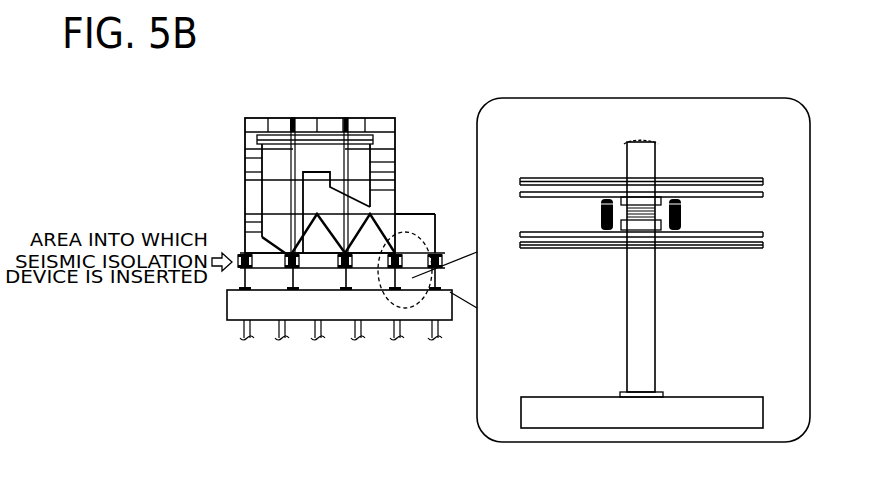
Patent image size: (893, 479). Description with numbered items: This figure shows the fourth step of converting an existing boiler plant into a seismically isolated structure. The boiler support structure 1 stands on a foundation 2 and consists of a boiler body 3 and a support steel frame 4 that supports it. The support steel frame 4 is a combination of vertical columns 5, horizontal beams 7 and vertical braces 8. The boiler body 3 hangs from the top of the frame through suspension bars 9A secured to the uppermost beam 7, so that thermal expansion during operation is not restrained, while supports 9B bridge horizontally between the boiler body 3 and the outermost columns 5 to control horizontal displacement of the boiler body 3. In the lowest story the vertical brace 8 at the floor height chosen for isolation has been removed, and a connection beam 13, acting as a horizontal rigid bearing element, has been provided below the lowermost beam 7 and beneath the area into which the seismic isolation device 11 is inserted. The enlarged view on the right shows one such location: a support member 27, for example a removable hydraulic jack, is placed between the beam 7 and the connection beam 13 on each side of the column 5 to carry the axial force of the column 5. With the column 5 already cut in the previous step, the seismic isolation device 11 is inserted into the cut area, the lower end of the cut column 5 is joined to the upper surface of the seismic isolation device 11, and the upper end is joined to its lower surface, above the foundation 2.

The boiler support structure 1 is at (318, 86).
The foundation 2 is at (227, 300).
The boiler body 3 is at (382, 160).
The support steel frame 4 is at (388, 110).
The column 5 is at (348, 160).
The beam 7 is at (382, 180).
The vertical brace 8 is at (333, 230).
The suspension bar 9A is at (307, 128).
The support 9B is at (245, 158).
The seismic isolation device 11 is at (627, 212).
The connection beam 13 is at (733, 232).
The support member 27 is at (603, 215).